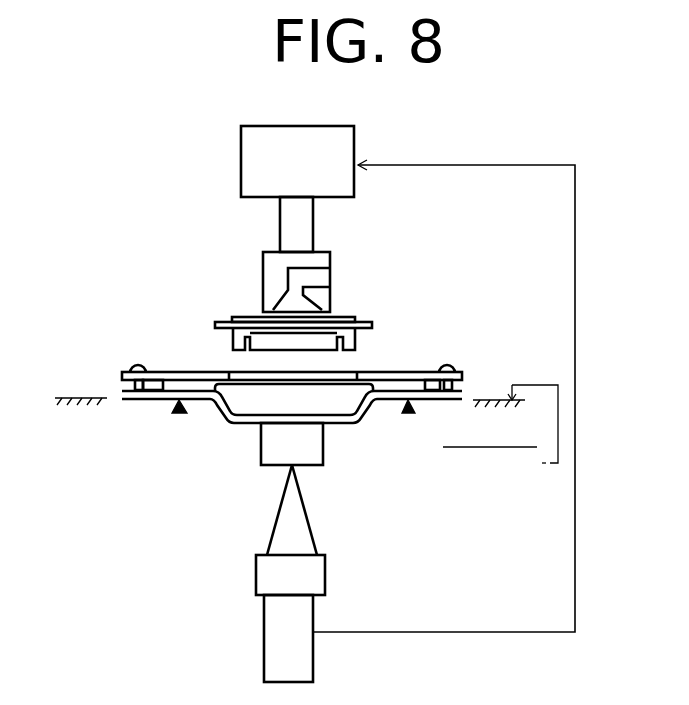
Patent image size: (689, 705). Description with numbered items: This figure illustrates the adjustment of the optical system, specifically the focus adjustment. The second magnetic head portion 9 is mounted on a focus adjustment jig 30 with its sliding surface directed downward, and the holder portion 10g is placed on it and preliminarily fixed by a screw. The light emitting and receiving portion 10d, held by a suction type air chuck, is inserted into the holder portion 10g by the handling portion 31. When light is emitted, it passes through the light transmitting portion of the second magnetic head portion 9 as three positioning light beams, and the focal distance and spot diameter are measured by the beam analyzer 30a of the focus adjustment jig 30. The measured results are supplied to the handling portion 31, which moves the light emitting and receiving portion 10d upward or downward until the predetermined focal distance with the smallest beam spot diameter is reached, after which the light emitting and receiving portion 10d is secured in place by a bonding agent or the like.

The handling portion 31 is at (241, 172).
The light emitting and receiving portion 10d is at (350, 318).
The holder portion 10g is at (390, 371).
The second magnetic head portion 9 is at (323, 440).
The focus adjustment jig 30 is at (82, 407).
The beam analyzer 30a is at (313, 658).